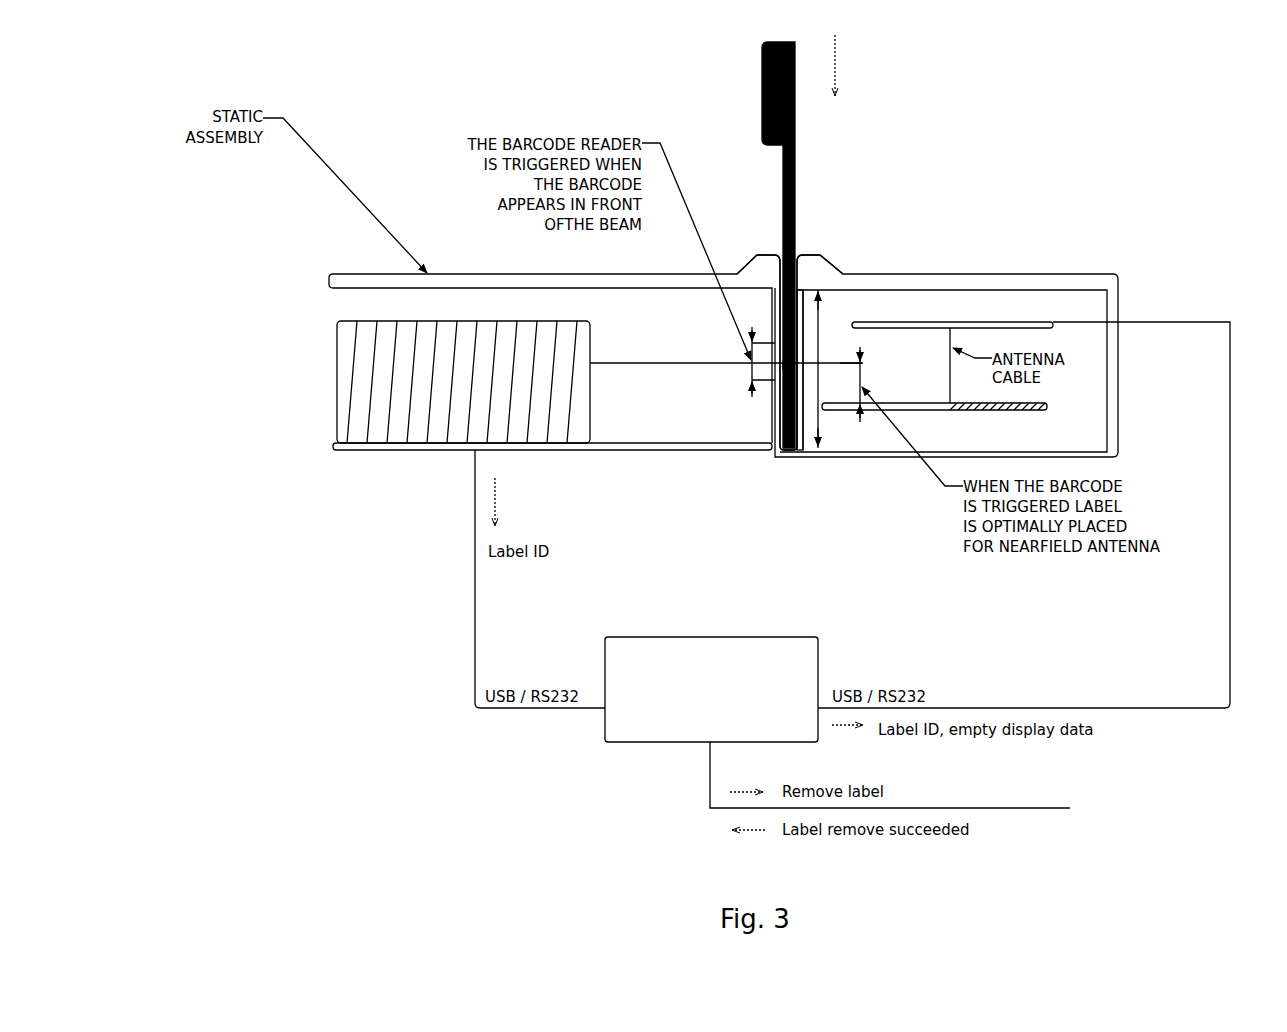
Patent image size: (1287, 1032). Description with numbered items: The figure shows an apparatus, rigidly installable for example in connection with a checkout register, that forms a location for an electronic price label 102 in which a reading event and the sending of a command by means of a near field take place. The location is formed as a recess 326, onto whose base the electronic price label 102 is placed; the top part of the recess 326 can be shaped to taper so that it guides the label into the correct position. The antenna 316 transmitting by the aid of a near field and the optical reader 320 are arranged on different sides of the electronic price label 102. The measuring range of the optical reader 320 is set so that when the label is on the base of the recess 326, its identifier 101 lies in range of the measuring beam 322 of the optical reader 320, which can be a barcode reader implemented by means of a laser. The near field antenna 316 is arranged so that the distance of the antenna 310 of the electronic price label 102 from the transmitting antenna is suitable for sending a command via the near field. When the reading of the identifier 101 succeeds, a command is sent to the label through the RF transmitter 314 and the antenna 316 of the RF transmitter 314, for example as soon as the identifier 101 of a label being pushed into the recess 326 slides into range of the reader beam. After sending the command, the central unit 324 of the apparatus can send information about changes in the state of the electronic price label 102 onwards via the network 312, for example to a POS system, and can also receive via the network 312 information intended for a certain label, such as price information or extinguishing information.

The recess 326 is at (770, 262).
The electronic price label 102 is at (796, 198).
The antenna of the electronic price label 310 is at (820, 320).
The RF transmitter 314 is at (975, 320).
The antenna of the RF transmitter 316 is at (844, 412).
The optical reader 320 is at (458, 420).
The measuring beam 322 is at (725, 365).
The identifier 101 is at (776, 368).
The central unit 324 is at (711, 689).
The network 312 is at (933, 798).